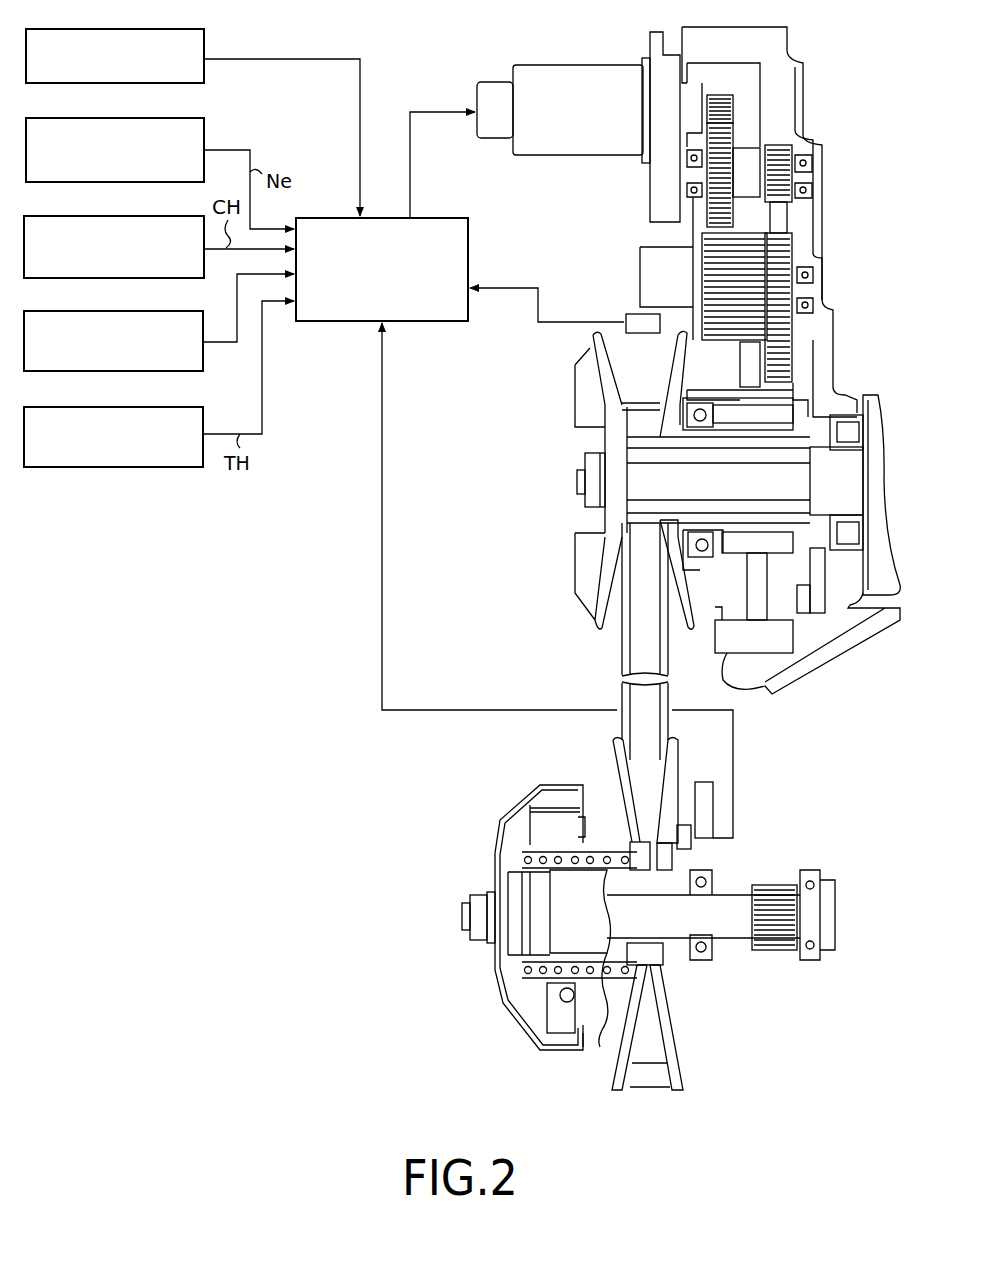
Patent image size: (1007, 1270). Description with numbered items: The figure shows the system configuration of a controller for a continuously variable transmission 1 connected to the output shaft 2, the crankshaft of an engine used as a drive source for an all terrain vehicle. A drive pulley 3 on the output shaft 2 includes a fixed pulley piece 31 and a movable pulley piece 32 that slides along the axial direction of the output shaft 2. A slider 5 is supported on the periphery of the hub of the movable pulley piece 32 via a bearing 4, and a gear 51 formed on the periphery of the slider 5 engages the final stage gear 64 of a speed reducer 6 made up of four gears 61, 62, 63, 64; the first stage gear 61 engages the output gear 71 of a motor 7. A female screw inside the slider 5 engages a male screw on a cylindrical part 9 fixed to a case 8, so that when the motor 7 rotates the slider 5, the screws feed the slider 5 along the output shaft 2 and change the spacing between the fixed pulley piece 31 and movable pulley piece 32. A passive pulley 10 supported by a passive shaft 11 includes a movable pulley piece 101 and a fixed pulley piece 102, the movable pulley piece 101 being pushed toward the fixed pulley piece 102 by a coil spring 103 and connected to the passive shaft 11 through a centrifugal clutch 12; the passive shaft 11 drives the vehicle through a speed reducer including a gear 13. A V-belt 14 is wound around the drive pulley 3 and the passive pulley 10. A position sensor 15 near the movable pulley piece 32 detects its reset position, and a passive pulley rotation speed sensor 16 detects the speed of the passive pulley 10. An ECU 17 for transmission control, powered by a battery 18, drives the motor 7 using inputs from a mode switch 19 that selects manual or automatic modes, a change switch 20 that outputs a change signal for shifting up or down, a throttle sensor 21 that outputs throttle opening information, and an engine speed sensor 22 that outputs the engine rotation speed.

The continuously variable transmission 1 is at (888, 168).
The output shaft 2 is at (843, 470).
The drive pulley 3 is at (592, 480).
The bearing 4 is at (702, 552).
The slider 5 is at (735, 570).
The speed reducer 6 is at (746, 223).
The motor 7 is at (581, 82).
The case 8 is at (822, 318).
The cylindrical part 9 is at (807, 413).
The passive pulley 10 is at (646, 903).
The passive shaft 11 is at (700, 920).
The centrifugal clutch 12 is at (497, 1012).
The gear 13 is at (770, 962).
The V-belt 14 is at (625, 640).
The position sensor 15 is at (630, 314).
The passive pulley rotation speed sensor 16 is at (682, 828).
The ECU for transmission control 17 is at (461, 207).
The battery 18 is at (181, 19).
The mode switch 19 is at (176, 300).
The change switch 20 is at (176, 205).
The throttle sensor 21 is at (176, 396).
The engine speed sensor 22 is at (180, 108).
The fixed pulley piece 31 is at (575, 368).
The movable pulley piece 32 is at (678, 358).
The gear 51 is at (750, 345).
The first stage gear 61 is at (728, 165).
The gear 62 is at (780, 147).
The gear 63 is at (780, 262).
The final stage gear 64 is at (702, 277).
The output gear 71 is at (730, 98).
The movable pulley piece 101 is at (608, 748).
The fixed pulley piece 102 is at (690, 755).
The coil spring 103 is at (597, 1047).